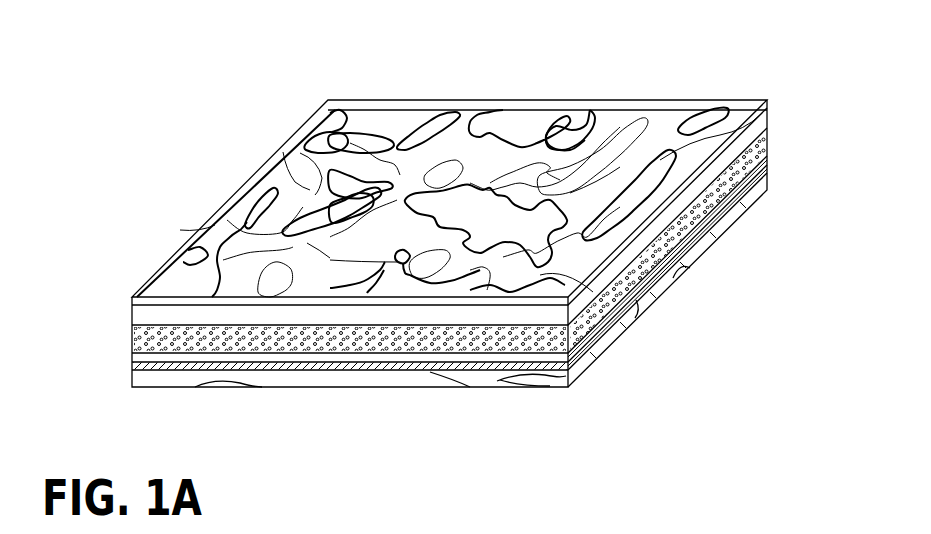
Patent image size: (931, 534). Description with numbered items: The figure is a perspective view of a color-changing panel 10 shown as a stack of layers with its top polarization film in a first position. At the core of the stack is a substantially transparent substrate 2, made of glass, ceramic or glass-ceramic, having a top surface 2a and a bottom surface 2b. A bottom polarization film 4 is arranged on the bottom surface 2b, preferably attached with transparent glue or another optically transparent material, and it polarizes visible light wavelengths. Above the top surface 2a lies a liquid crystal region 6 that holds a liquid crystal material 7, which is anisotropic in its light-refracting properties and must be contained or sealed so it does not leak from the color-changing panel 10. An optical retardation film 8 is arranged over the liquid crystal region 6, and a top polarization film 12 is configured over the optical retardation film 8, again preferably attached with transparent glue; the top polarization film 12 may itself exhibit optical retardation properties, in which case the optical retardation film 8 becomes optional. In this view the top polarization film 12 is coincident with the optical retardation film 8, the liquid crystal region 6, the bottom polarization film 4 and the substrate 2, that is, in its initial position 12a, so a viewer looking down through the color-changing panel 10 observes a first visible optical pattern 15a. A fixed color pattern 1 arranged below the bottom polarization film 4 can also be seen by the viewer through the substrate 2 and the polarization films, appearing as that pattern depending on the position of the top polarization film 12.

The color-changing panel 10 is at (112, 160).
The top polarization film 12 is at (132, 300).
The initial position 12a is at (275, 88).
The first visible optical pattern 15a is at (283, 152).
The optical retardation film 8 is at (758, 122).
The liquid crystal region 6 is at (140, 338).
The substrate 2 is at (132, 356).
The top surface 2a is at (768, 150).
The bottom surface 2b is at (772, 178).
The bottom polarization film 4 is at (768, 187).
The liquid crystal material 7 is at (480, 333).
The fixed color pattern 1 is at (653, 294).